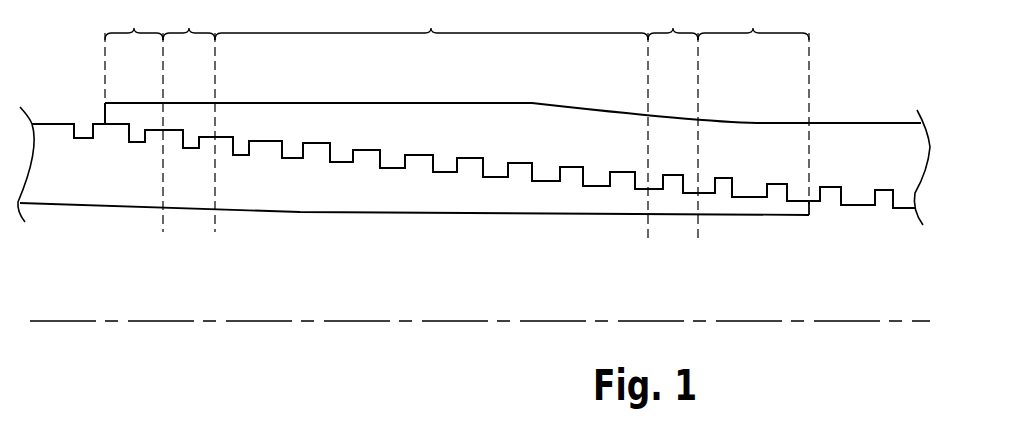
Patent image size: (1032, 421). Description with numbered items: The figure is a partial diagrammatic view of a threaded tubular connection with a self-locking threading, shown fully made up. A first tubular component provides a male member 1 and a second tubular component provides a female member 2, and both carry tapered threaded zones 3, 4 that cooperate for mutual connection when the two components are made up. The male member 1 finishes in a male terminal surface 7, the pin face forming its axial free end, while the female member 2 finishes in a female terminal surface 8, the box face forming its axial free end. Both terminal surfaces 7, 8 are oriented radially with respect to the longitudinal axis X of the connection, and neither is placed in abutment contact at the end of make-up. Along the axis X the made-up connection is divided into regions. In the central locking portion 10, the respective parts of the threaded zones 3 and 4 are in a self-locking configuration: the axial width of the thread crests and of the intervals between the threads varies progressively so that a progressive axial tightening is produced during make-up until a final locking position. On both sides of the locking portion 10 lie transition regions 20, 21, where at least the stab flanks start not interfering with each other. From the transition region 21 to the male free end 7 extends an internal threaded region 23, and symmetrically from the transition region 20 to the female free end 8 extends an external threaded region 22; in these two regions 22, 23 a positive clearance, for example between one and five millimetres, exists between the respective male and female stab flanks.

The male member 1 is at (300, 190).
The female member 2 is at (475, 120).
The tapered threaded zone of the male member 3 is at (420, 170).
The tapered threaded zone of the female member 4 is at (396, 150).
The male terminal surface 7 is at (810, 207).
The female terminal surface 8 is at (103, 113).
The locking portion 10 is at (431, 20).
The transition region 20 is at (189, 20).
The transition region 21 is at (673, 20).
The external threaded region 22 is at (134, 20).
The internal threaded region 23 is at (753, 20).
The longitudinal axis X is at (905, 321).